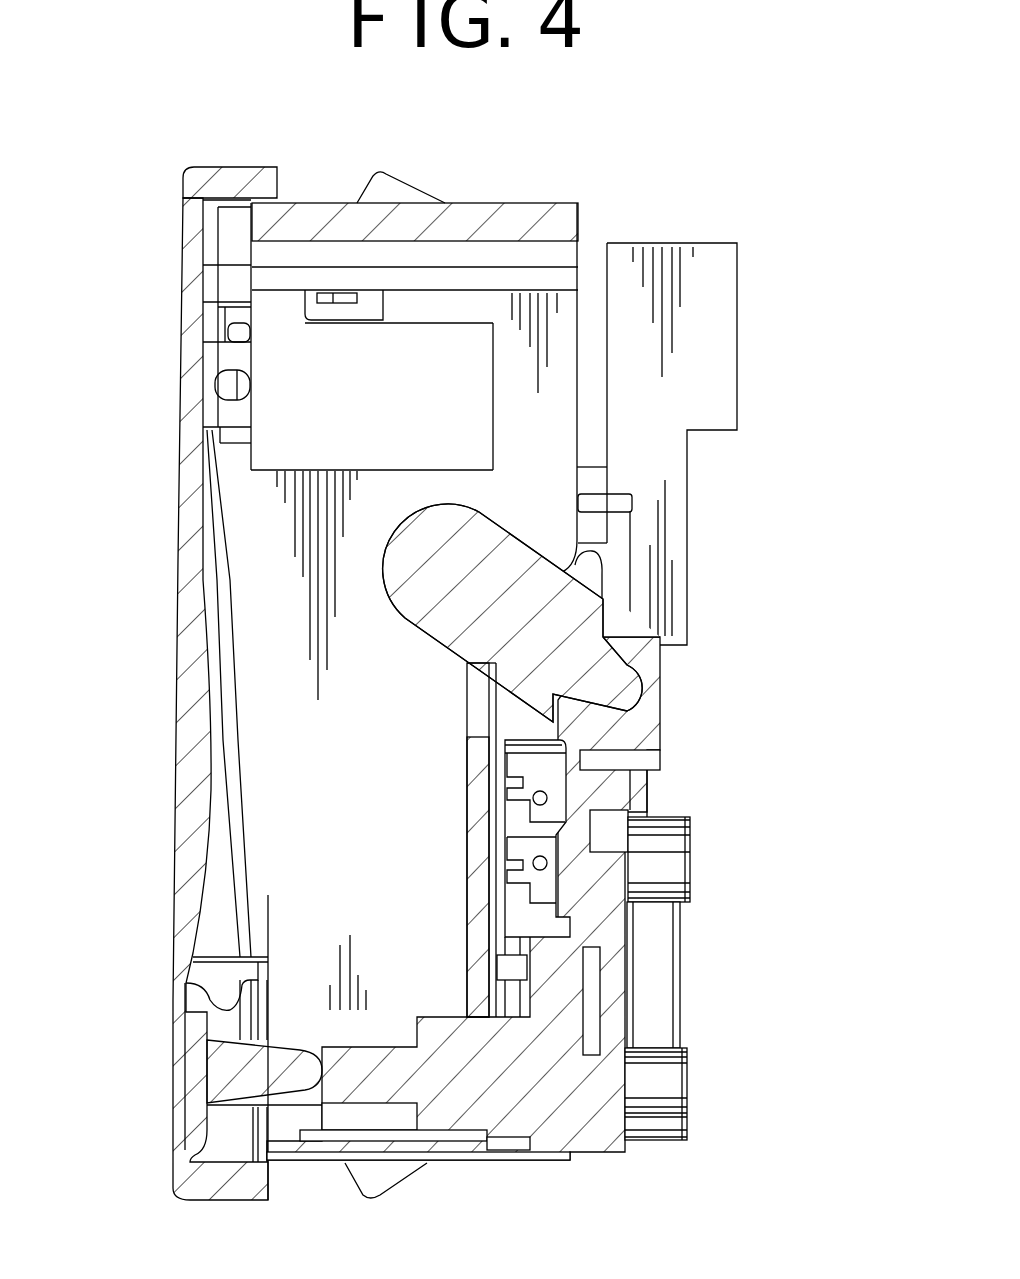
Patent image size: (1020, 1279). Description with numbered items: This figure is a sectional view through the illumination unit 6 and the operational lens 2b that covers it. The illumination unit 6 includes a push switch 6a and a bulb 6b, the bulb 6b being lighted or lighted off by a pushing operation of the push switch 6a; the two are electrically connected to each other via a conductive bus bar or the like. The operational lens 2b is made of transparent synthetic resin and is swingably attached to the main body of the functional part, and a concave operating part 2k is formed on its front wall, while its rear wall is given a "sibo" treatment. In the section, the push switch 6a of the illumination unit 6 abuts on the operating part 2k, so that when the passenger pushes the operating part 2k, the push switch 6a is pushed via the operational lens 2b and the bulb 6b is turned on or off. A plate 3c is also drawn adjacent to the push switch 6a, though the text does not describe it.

The operational lens 2b is at (197, 668).
The operating part 2k is at (175, 1040).
The plate 3c is at (470, 830).
The illumination unit 6 is at (677, 792).
The push switch 6a is at (433, 1075).
The bulb 6b is at (408, 538).